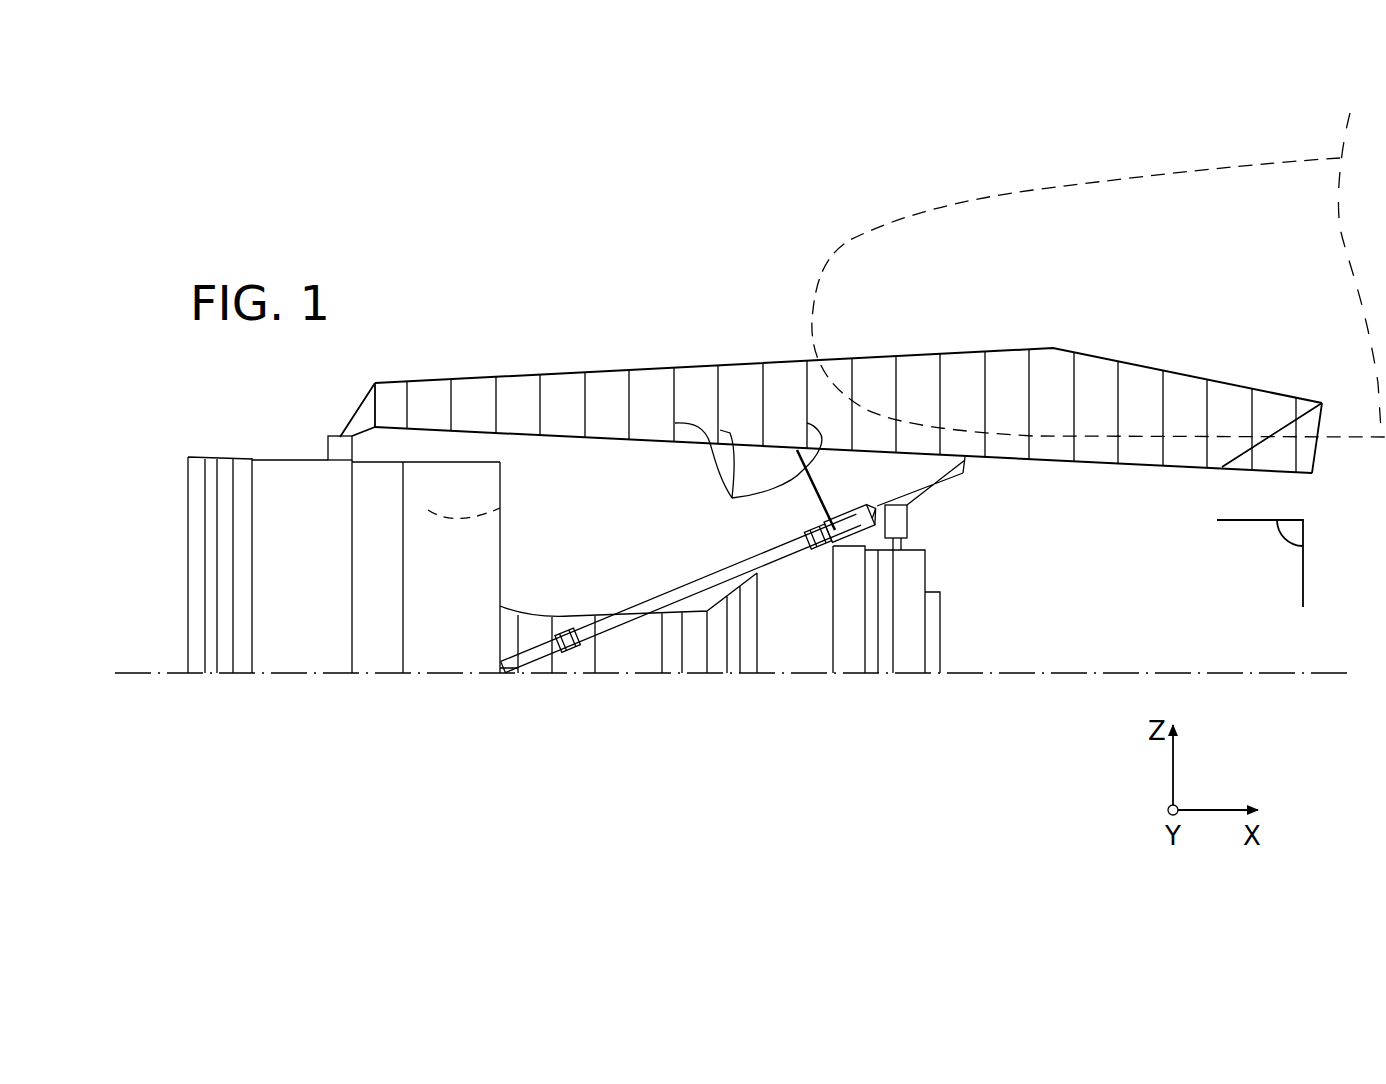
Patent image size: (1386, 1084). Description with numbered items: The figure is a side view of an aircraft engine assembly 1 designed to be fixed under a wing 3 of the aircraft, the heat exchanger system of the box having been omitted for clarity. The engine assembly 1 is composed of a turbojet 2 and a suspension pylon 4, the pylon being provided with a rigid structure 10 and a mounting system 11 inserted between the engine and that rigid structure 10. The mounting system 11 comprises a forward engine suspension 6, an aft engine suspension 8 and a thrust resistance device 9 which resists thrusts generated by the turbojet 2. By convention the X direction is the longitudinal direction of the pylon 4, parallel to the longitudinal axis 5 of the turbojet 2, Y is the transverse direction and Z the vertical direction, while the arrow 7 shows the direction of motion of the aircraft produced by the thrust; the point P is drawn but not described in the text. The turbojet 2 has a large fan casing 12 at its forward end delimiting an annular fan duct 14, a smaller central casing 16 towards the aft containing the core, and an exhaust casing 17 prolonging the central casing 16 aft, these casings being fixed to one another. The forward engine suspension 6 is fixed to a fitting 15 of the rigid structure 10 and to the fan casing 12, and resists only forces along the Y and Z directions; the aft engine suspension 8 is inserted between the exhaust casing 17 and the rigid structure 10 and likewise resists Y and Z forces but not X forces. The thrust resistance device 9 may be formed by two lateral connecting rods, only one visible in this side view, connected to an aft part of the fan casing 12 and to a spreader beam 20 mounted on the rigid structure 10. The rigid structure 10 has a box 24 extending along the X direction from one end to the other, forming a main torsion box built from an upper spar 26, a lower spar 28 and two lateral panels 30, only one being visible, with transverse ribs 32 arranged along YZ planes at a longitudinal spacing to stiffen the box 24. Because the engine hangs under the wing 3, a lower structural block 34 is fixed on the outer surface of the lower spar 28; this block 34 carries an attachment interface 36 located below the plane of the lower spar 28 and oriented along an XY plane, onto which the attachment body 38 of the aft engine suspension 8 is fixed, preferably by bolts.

The aircraft engine assembly 1 is at (475, 748).
The turbojet 2 is at (186, 459).
The wing 3 is at (1068, 180).
The suspension pylon 4 is at (897, 318).
The longitudinal axis 5 is at (1195, 672).
The forward engine suspension 6 is at (342, 450).
The arrow 7 is at (282, 743).
The aft engine suspension 8 is at (893, 604).
The thrust resistance device 9 is at (702, 583).
The rigid structure 10 is at (848, 362).
The mounting system 11 is at (758, 748).
The fan casing 12 is at (188, 598).
The annular fan duct 14 is at (500, 508).
The fitting 15 is at (362, 393).
The central casing 16 is at (585, 608).
The exhaust casing 17 is at (920, 550).
The spreader beam 20 is at (855, 525).
The box 24 is at (700, 362).
The upper spar 26 is at (490, 380).
The lower spar 28 is at (600, 448).
The lateral panel 30 is at (615, 378).
The transverse ribs 32 is at (748, 473).
The lower structural block 34 is at (810, 440).
The attachment interface 36 is at (913, 517).
The attachment body 38 is at (910, 528).
The point P is at (1303, 530).